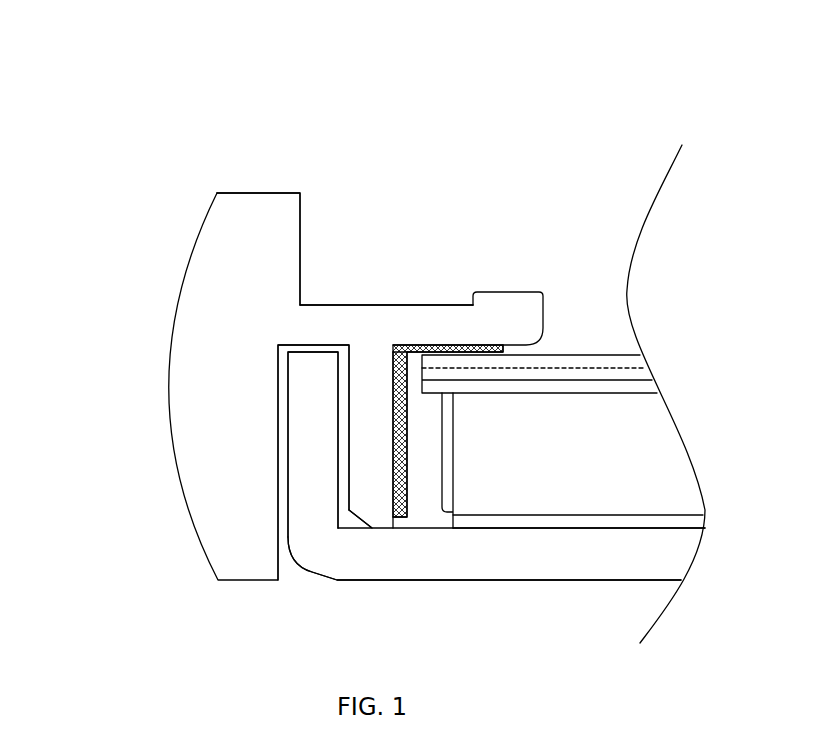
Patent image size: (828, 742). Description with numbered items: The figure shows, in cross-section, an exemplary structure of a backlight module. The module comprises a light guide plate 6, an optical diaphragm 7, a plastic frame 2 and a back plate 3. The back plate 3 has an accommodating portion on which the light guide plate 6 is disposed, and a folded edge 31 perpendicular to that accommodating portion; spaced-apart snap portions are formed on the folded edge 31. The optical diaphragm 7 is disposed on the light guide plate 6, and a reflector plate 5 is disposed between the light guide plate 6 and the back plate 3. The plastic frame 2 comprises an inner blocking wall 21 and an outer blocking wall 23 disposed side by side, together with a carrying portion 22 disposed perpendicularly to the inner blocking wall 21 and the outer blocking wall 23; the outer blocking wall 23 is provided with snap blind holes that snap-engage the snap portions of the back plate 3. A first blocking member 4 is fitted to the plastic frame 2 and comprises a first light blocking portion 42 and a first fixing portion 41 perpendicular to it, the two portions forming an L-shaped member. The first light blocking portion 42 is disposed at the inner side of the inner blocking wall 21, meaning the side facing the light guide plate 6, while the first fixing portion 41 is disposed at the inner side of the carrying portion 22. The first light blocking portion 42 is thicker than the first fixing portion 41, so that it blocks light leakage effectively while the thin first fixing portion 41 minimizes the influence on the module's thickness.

The plastic frame 2 is at (192, 260).
The outer blocking wall 23 is at (245, 227).
The inner blocking wall 21 is at (370, 397).
The carrying portion 22 is at (452, 323).
The folded edge 31 is at (312, 399).
The first blocking member 4 is at (315, 344).
The first fixing portion 41 is at (487, 351).
The first light blocking portion 42 is at (392, 498).
The optical diaphragm 7 is at (538, 372).
The back plate 3 is at (312, 572).
The reflector plate 5 is at (475, 523).
The light guide plate 6 is at (617, 492).